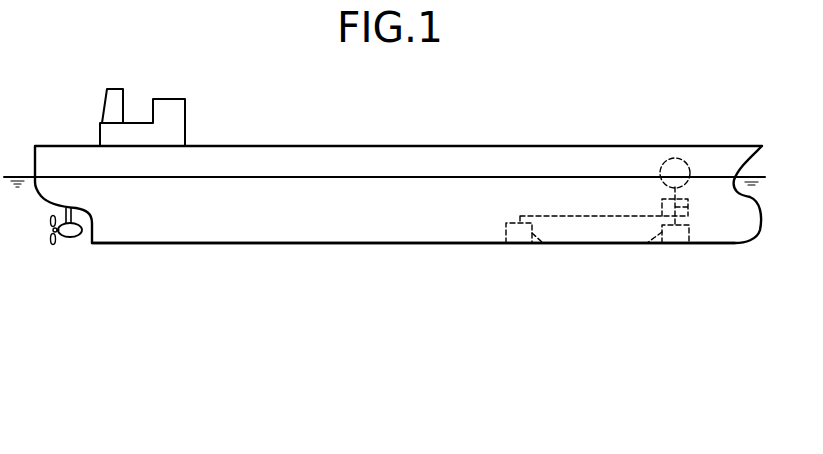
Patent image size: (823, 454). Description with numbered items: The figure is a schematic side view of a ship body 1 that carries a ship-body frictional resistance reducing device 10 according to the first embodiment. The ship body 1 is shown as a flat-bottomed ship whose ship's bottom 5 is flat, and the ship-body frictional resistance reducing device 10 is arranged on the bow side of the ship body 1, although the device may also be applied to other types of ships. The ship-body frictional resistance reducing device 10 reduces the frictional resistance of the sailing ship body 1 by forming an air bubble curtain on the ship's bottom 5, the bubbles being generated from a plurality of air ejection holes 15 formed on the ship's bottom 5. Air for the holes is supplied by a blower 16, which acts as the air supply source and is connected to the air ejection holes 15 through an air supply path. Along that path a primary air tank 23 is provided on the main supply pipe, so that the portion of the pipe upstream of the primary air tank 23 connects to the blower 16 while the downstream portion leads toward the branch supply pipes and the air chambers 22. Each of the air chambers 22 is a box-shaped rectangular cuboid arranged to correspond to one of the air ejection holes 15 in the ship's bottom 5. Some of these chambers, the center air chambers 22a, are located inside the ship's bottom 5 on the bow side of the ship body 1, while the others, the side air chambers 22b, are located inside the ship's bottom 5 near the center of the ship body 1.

The ship body 1 is at (384, 194).
The ship's bottom 5 is at (207, 245).
The ship-body frictional resistance reducing device 10 is at (706, 213).
The air ejection holes 15 is at (518, 243).
The blower 16 is at (682, 158).
The air chambers 22 is at (650, 303).
The center air chambers 22a is at (647, 243).
The side air chambers 22b is at (543, 243).
The primary air tank 23 is at (662, 203).